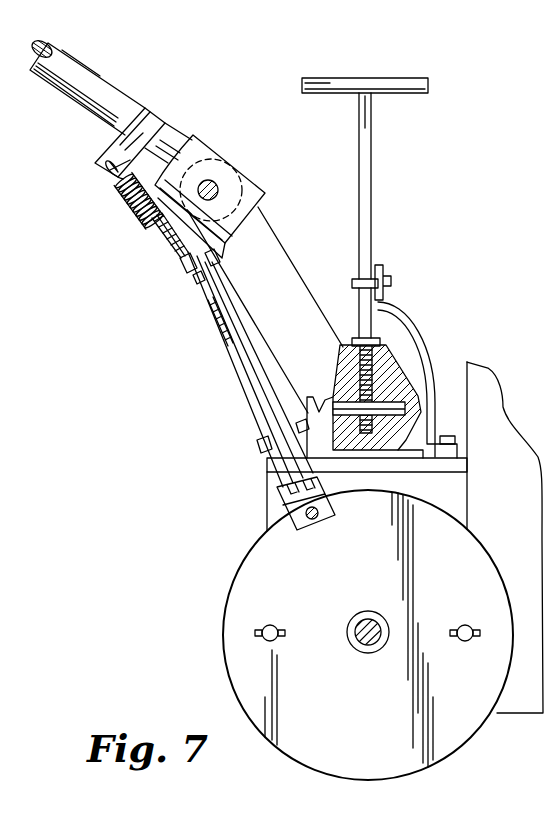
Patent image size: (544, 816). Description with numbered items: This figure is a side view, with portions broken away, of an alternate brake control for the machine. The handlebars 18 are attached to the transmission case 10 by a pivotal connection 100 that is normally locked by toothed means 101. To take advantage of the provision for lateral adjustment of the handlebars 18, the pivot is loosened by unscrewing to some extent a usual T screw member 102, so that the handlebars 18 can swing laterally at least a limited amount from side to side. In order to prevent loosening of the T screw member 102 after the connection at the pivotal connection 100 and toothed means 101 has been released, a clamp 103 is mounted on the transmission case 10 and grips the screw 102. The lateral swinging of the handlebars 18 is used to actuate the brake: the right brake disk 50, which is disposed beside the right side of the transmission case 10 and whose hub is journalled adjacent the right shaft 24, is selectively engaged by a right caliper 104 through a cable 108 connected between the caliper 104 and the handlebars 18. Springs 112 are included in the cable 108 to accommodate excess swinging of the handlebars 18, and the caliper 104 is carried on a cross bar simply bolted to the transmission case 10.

The handlebars 18 is at (100, 73).
The springs 112 is at (133, 205).
The cable 108 is at (167, 252).
The right caliper 104 is at (258, 481).
The T screw member 102 is at (413, 78).
The clamp 103 is at (383, 272).
The toothed means 101 is at (419, 388).
The pivotal connection 100 is at (392, 352).
The transmission case 10 is at (509, 710).
The right brake disk 50 is at (388, 728).
The right shaft 24 is at (354, 648).